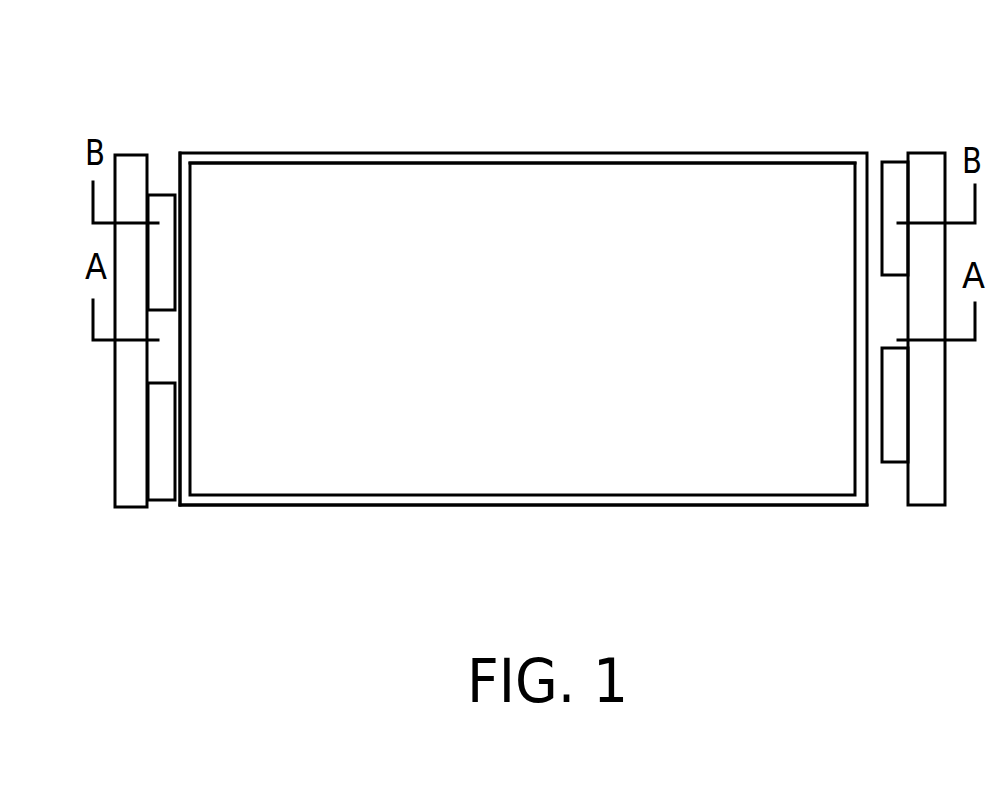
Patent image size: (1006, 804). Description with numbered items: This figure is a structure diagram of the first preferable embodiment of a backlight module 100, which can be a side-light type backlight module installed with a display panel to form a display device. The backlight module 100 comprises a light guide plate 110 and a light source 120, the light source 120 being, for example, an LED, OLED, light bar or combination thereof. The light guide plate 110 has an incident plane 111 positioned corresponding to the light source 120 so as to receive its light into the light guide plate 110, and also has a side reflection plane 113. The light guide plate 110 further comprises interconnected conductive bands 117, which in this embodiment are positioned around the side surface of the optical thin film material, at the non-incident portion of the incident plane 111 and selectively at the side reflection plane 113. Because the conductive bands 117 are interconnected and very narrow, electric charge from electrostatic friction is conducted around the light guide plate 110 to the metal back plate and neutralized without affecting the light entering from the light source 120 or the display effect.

The backlight module 100 is at (315, 153).
The light guide plate 110 is at (517, 183).
The incident plane 111 is at (187, 193).
The side reflection plane 113 is at (418, 505).
The conductive bands 117 is at (665, 163).
The light source 120 is at (925, 177).